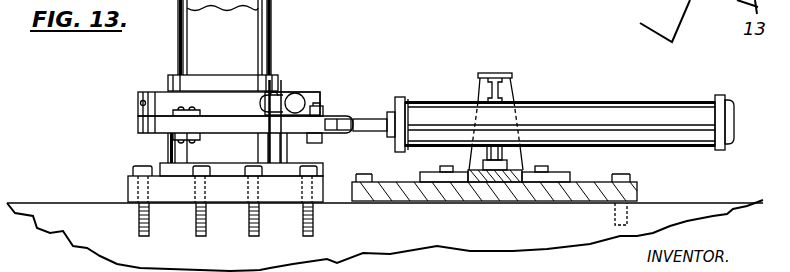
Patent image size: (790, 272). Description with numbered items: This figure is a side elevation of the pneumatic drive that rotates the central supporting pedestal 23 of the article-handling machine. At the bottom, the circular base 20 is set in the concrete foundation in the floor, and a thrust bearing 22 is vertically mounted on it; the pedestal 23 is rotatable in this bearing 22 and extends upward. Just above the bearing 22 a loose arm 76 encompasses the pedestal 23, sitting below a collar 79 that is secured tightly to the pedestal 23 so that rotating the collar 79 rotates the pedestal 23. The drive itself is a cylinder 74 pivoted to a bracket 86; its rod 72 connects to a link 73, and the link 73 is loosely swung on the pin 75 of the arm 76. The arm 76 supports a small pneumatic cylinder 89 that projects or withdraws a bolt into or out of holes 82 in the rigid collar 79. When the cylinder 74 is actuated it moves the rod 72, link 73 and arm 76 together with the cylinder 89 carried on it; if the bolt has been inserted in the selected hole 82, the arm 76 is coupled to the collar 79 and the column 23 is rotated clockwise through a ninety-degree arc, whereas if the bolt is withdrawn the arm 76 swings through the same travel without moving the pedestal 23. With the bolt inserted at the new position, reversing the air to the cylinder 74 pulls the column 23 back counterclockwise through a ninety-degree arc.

The circular base 20 is at (72, 246).
The thrust bearing 22 is at (167, 146).
The central supporting pedestal 23 is at (273, 33).
The rod 72 is at (382, 98).
The link 73 is at (343, 113).
The cylinder 74 is at (595, 102).
The pin 75 is at (322, 106).
The arm 76 is at (300, 140).
The collar 79 is at (168, 80).
The holes 82 is at (137, 104).
The bracket 86 is at (495, 75).
The small pneumatic cylinder 89 is at (291, 97).